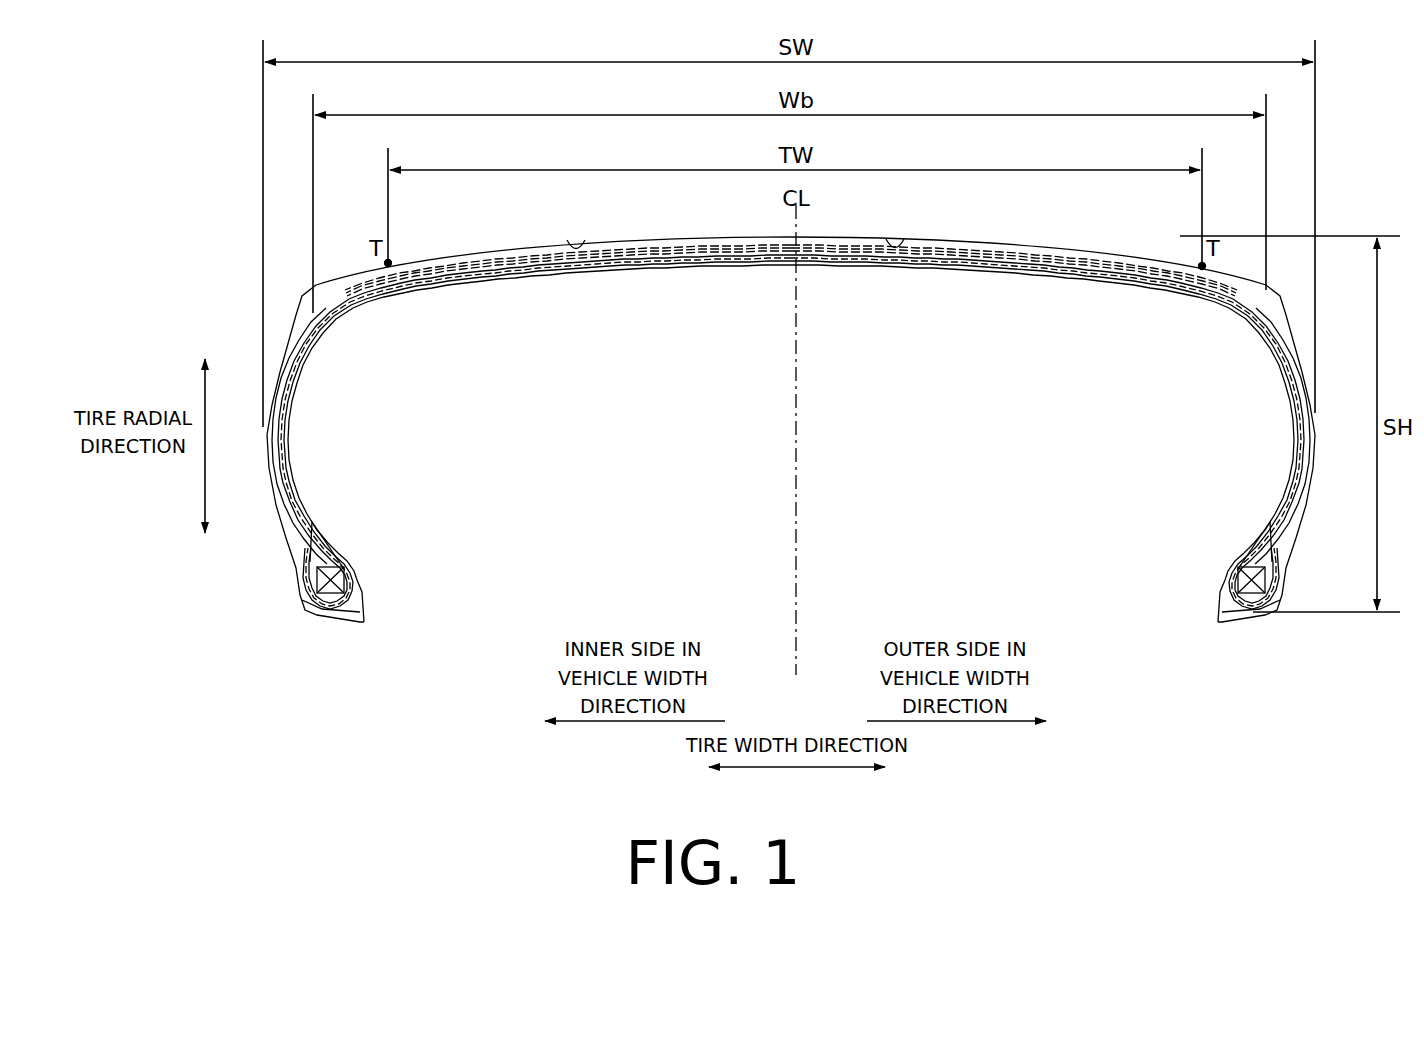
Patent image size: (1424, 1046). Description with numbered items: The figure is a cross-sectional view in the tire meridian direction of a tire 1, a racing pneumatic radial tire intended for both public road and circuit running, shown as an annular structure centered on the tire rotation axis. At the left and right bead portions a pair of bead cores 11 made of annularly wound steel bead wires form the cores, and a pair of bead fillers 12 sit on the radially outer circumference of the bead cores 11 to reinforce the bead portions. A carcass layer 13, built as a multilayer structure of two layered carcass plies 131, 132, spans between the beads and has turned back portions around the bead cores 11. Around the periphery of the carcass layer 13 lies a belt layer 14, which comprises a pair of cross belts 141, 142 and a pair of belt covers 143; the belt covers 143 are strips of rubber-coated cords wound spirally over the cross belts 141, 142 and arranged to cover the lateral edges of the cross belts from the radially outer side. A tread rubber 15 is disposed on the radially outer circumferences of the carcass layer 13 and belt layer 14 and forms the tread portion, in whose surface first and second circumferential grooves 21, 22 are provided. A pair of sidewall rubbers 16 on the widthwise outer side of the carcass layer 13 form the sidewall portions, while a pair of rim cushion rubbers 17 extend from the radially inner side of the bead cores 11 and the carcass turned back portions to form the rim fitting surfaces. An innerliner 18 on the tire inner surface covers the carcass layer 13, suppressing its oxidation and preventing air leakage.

The tire 1 is at (1006, 228).
The bead core 11 is at (1284, 580).
The bead filler 12 is at (1247, 554).
The carcass layer 13 is at (791, 429).
The carcass ply 131 is at (1255, 333).
The carcass ply 132 is at (1275, 362).
The belt layer 14 is at (791, 321).
The cross belt 141 is at (1073, 273).
The cross belt 142 is at (1110, 278).
The belt cover 143 is at (977, 346).
The tread rubber 15 is at (1130, 244).
The sidewall rubber 16 is at (1313, 415).
The rim cushion rubber 17 is at (1230, 607).
The innerliner 18 is at (1269, 497).
The first circumferential groove 21 is at (893, 240).
The second circumferential groove 22 is at (576, 244).